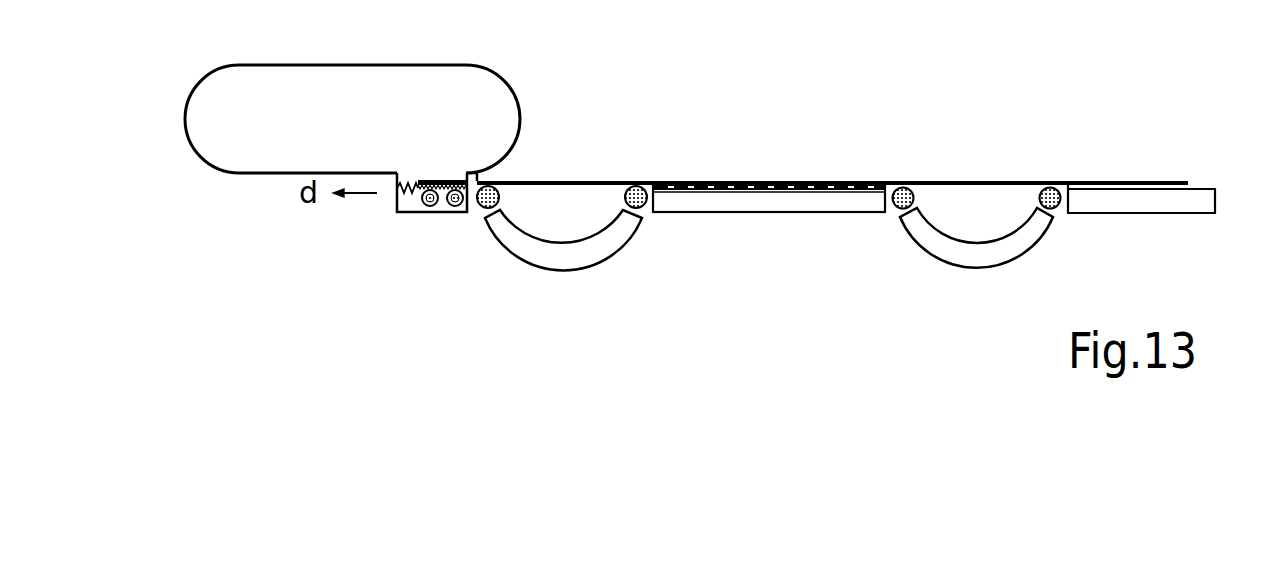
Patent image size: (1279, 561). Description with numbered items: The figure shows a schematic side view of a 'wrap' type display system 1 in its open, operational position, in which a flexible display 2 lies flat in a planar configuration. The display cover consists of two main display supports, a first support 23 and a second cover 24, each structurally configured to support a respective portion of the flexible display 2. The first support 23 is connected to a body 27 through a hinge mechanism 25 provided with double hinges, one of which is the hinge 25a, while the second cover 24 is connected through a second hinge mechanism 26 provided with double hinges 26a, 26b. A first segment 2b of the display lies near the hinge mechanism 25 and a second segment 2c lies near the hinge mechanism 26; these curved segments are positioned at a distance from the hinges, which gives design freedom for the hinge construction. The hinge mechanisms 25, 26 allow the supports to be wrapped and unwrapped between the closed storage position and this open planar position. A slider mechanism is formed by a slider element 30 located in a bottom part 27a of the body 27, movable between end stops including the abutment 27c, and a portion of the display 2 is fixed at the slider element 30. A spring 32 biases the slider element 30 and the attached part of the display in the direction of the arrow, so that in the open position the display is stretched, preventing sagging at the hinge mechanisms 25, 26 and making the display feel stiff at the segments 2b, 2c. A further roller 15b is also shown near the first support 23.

The display system 1 is at (1240, 252).
The flexible display 2 is at (720, 178).
The first segment of the display 2b is at (575, 180).
The second segment of the display 2c is at (957, 178).
The roller 15b is at (642, 208).
The first support 23 is at (772, 198).
The second cover 24 is at (1142, 198).
The hinge mechanism 25 is at (585, 253).
The double hinge 25a is at (492, 207).
The hinge mechanism 26 is at (942, 257).
The double hinge 26a is at (895, 207).
The double hinge 26b is at (1053, 187).
The body 27 is at (258, 148).
The bottom part 27a is at (413, 202).
The abutment 27c is at (477, 185).
The slider element 30 is at (442, 212).
The spring 32 is at (405, 193).